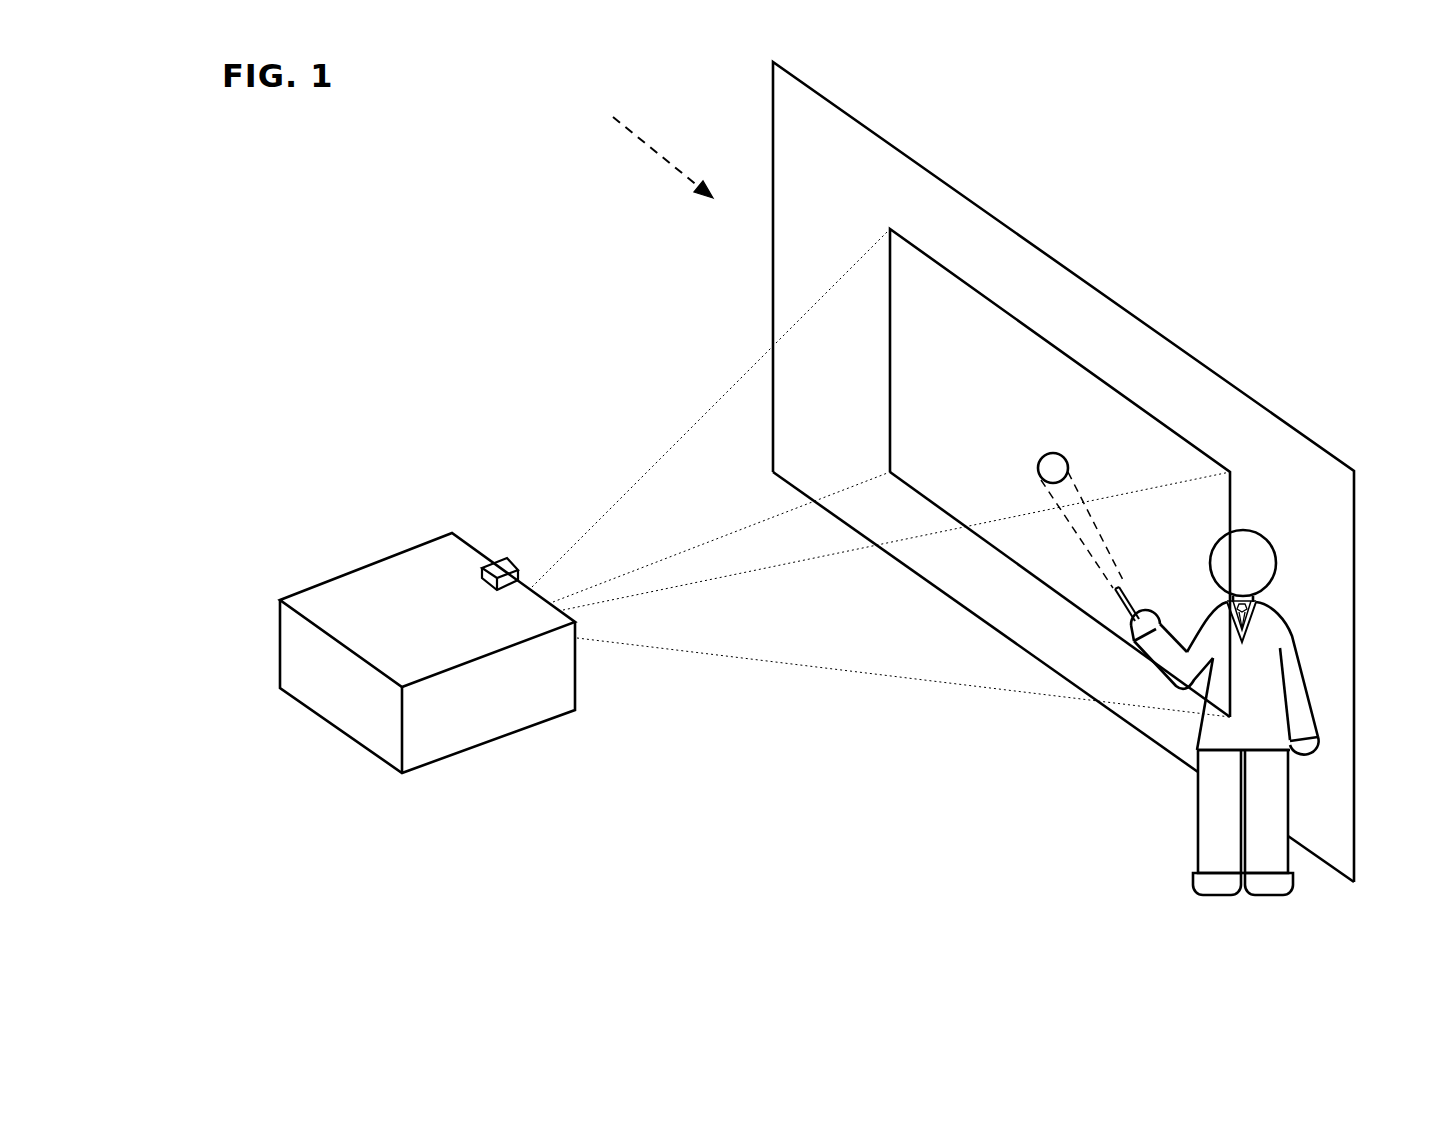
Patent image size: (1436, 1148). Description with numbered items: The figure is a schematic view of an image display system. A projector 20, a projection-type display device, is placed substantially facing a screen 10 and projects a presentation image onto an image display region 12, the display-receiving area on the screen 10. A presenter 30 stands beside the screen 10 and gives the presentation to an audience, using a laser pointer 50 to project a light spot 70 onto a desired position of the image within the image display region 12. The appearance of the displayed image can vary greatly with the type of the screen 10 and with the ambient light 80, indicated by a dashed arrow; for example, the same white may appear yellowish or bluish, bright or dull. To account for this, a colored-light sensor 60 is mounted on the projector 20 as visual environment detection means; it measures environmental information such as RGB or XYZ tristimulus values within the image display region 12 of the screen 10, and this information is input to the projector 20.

The screen 10 is at (1104, 294).
The image display region 12 is at (1104, 382).
The projector 20 is at (553, 700).
The presenter 30 is at (1255, 530).
The laser pointer 50 is at (1143, 605).
The colored-light sensor 60 is at (500, 566).
The light spot 70 is at (1068, 463).
The ambient light 80 is at (637, 131).